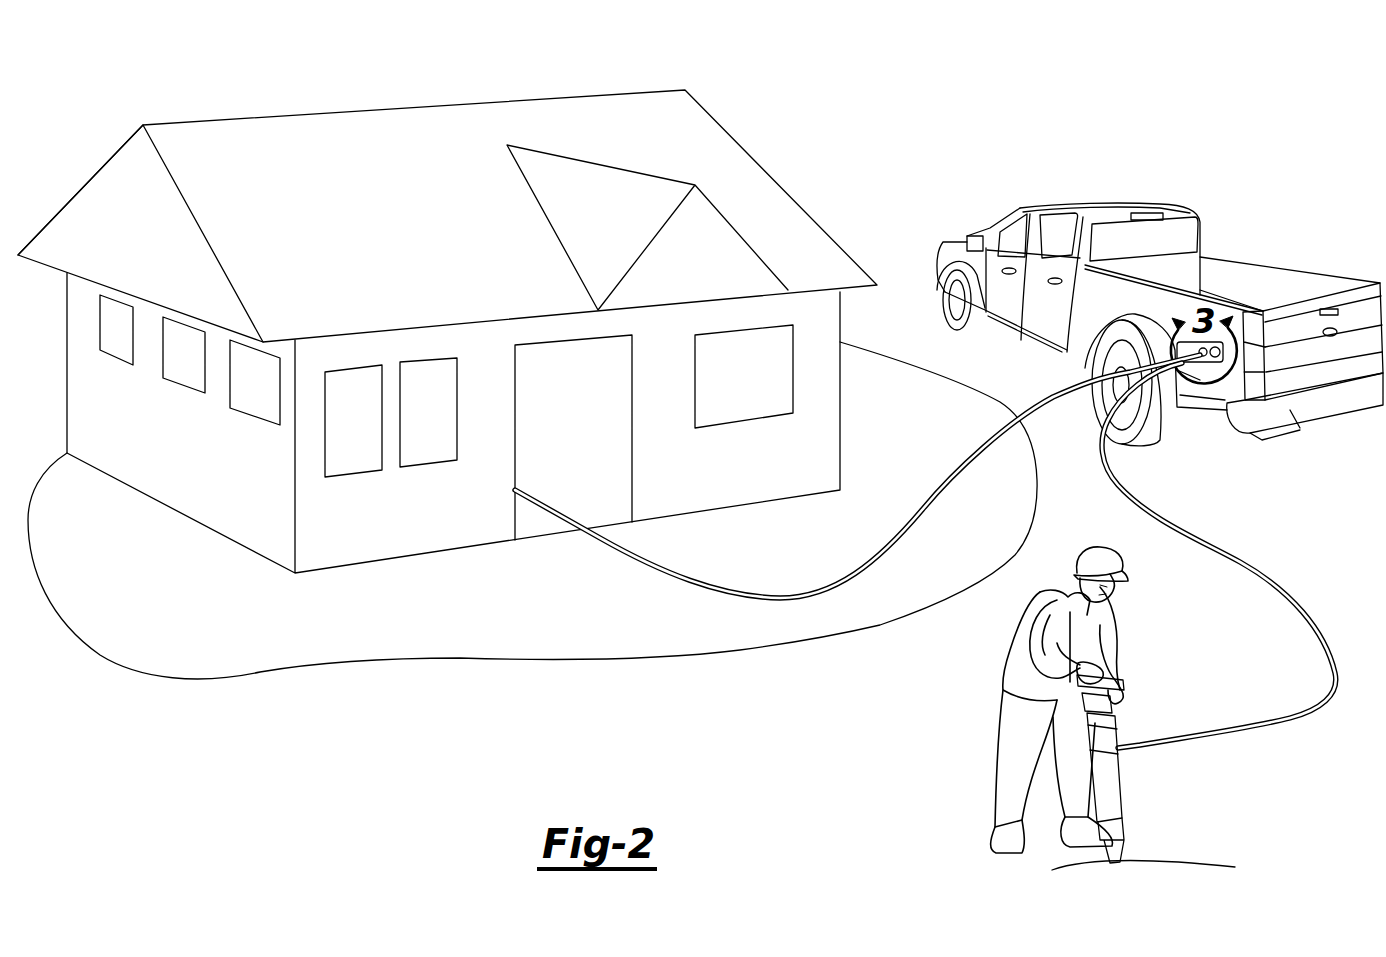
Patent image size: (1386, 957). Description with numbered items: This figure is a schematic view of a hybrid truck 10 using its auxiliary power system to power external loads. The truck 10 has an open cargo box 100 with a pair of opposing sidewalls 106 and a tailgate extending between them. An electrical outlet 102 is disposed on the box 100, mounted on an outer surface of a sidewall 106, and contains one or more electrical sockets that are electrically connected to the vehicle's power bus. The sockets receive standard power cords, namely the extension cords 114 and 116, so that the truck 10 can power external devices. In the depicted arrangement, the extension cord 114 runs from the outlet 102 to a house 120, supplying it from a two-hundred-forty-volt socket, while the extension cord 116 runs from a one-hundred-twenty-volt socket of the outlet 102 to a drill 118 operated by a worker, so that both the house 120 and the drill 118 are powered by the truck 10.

The truck 10 is at (1095, 208).
The cargo box 100 is at (1353, 300).
The electrical outlet 102 is at (1247, 350).
The sidewall 106 is at (1210, 402).
The extension cord 114 is at (963, 460).
The extension cord 116 is at (1237, 557).
The drill 118 is at (1127, 797).
The house 120 is at (370, 108).